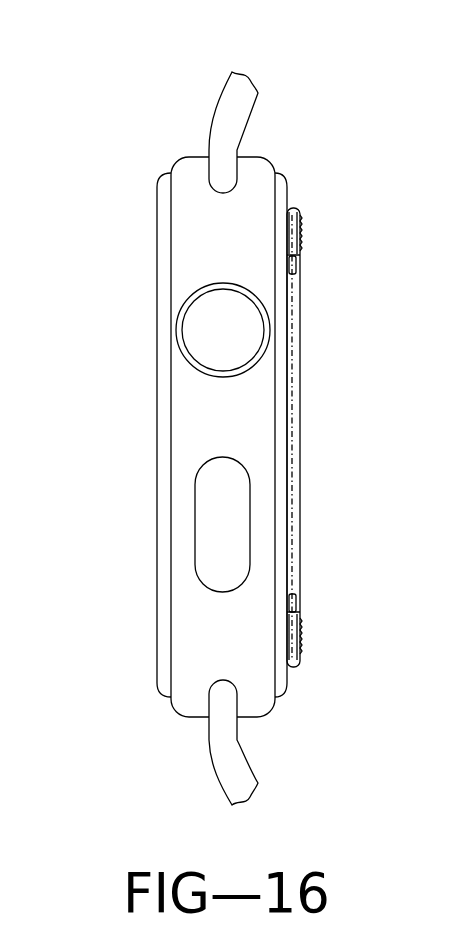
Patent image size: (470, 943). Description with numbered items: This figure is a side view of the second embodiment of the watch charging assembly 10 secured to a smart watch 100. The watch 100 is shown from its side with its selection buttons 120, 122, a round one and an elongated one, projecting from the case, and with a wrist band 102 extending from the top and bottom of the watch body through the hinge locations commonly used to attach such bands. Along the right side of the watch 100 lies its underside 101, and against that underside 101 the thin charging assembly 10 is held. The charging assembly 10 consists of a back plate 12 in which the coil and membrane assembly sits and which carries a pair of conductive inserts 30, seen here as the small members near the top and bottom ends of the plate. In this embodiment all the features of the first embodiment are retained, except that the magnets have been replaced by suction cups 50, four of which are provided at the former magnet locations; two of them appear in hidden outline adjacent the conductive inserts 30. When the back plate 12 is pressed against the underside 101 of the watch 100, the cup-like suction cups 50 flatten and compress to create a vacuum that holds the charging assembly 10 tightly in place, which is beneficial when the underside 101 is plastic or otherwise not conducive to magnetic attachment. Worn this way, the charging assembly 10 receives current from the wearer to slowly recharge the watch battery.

The charging assembly 10 is at (362, 404).
The back plate 12 is at (300, 487).
The conductive insert 30 is at (302, 233).
The suction cup 50 is at (300, 275).
The watch 100 is at (213, 420).
The underside 101 is at (285, 690).
The wrist band 102 is at (223, 128).
The selection button 120 is at (223, 335).
The selection button 122 is at (222, 512).